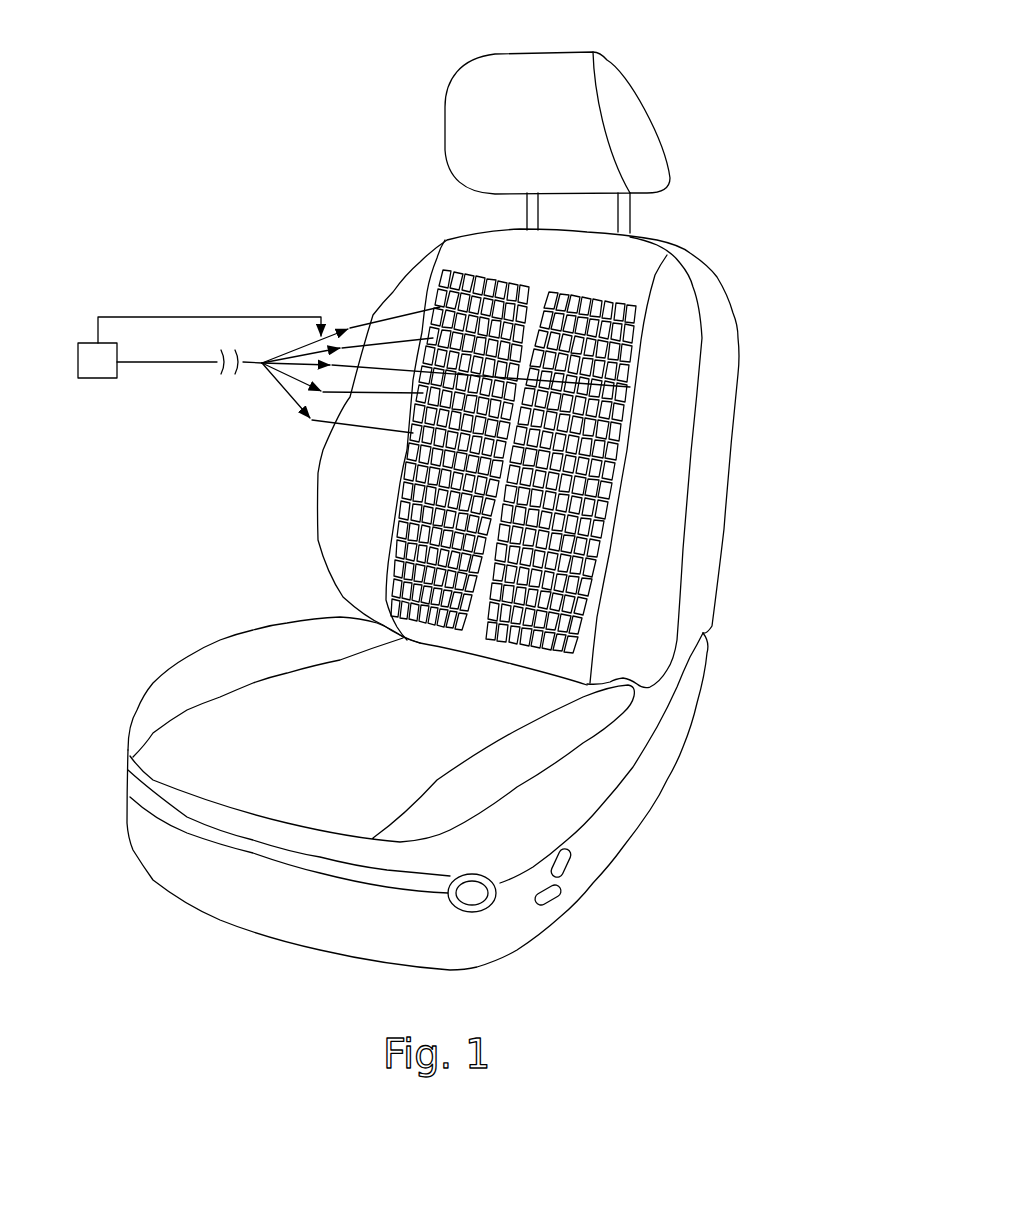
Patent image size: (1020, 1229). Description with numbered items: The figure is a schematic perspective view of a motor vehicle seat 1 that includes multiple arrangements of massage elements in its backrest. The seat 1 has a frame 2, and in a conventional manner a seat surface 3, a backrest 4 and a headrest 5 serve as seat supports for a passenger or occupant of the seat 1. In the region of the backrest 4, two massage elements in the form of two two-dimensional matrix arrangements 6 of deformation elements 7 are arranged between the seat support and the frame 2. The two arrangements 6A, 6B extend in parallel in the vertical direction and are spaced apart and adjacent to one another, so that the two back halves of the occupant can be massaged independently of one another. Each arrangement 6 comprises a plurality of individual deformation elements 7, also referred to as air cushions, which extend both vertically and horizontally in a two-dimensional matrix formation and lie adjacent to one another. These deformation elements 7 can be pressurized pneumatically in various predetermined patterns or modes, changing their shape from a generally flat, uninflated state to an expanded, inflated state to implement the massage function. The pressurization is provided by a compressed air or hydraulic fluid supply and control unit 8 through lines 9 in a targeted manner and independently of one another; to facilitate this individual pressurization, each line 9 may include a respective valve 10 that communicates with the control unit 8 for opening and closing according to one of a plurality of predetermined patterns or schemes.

The motor vehicle seat 1 is at (345, 168).
The frame 2 is at (730, 717).
The seat surface 3 is at (237, 730).
The backrest 4 is at (728, 371).
The headrest 5 is at (633, 112).
The two-dimensional matrix arrangement 6 is at (521, 400).
The two-dimensional matrix arrangement 6A is at (375, 389).
The two-dimensional matrix arrangement 6B is at (565, 537).
The deformation element 7 is at (470, 283).
The compressed air supply and control unit 8 is at (93, 360).
The line 9 is at (393, 318).
The valve 10 is at (321, 317).